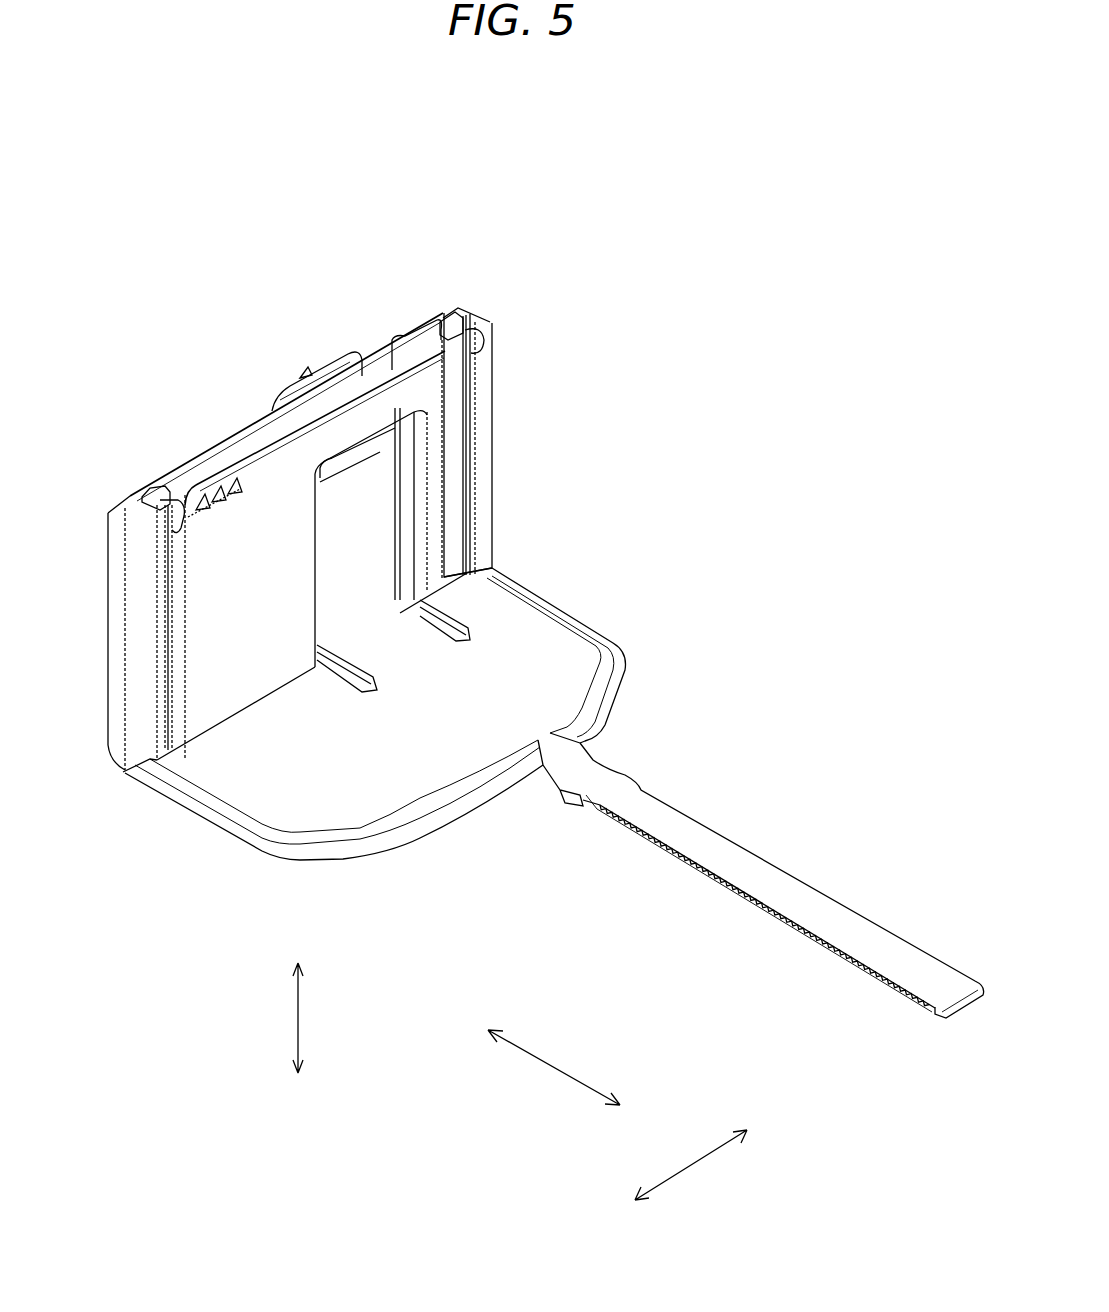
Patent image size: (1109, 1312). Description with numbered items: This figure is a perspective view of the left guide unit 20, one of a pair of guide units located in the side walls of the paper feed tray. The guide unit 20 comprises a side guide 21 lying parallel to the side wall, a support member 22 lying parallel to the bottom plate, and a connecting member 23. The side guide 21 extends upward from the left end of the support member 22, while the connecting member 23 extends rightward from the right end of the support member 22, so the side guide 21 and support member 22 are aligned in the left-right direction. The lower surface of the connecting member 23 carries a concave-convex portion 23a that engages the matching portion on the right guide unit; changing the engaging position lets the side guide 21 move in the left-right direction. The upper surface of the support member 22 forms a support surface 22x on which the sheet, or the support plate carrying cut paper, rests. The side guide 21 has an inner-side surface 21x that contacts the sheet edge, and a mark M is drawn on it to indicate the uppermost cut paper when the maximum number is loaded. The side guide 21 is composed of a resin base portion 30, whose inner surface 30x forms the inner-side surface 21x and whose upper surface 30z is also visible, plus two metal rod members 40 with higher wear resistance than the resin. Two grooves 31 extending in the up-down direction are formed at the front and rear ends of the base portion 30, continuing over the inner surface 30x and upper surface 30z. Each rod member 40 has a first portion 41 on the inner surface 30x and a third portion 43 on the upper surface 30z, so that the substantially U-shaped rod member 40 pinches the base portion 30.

The guide unit 20 is at (792, 179).
The side guide 21 is at (485, 430).
The inner-side surface 21x is at (272, 593).
The support member 22 is at (543, 640).
The support surface 22x is at (440, 738).
The connecting member 23 is at (783, 892).
The concave-convex portion 23a is at (745, 900).
The base portion 30 is at (260, 427).
The inner surface 30x is at (283, 632).
The upper surface 30z is at (210, 457).
The groove 31 is at (165, 628).
The rod member 40 is at (160, 410).
The first portion 41 is at (162, 520).
The third portion 43 is at (147, 497).
The mark M is at (250, 481).